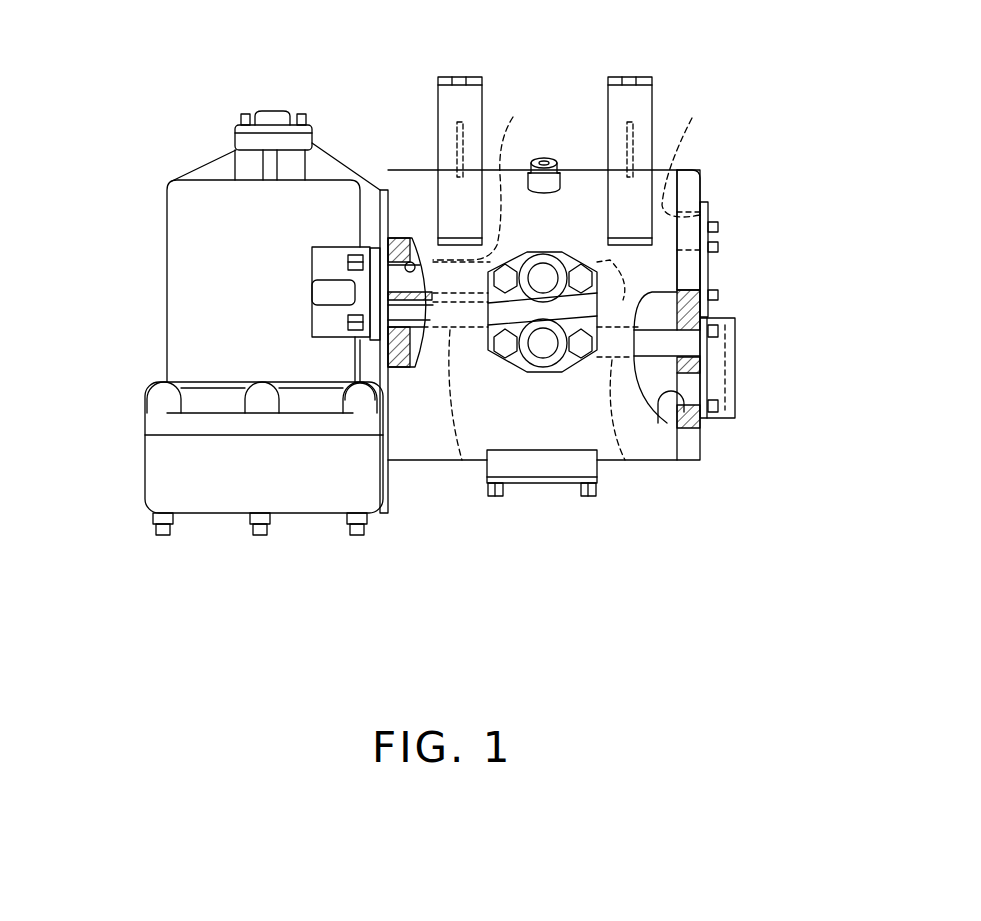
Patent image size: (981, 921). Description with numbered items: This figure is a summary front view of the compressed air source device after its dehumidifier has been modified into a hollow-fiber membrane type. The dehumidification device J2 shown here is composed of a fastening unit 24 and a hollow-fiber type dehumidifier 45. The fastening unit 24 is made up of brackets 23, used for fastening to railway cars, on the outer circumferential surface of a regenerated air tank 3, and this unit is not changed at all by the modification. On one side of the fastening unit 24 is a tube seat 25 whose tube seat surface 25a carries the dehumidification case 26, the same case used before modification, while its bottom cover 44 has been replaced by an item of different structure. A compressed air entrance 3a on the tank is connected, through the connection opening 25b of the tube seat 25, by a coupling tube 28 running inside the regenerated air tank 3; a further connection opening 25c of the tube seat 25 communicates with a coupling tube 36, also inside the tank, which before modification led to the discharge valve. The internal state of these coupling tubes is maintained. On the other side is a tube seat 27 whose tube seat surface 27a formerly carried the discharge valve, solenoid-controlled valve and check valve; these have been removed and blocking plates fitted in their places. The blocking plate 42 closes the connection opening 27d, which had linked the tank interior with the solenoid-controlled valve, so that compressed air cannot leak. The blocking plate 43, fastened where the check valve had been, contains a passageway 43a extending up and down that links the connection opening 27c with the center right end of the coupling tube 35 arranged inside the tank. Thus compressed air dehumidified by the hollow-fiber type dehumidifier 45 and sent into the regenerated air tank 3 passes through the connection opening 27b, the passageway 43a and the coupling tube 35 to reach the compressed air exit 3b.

The dehumidification device J2 is at (134, 162).
The hollow-fiber type dehumidifier 45 is at (152, 267).
The dehumidification case 26 is at (185, 325).
The bottom cover 44 is at (219, 497).
The tube seat 25 is at (397, 440).
The tube seat surface 25a is at (412, 253).
The connection opening 25b is at (418, 296).
The connection opening 25c is at (422, 380).
The regenerated air tank 3 is at (517, 193).
The compressed air entrance 3a is at (567, 257).
The compressed air exit 3b is at (518, 350).
The brackets 23 is at (447, 98).
The coupling tube 28 is at (485, 170).
The connection opening 27d is at (703, 148).
The tube seat surface 27a is at (703, 183).
The blocking plate 42 is at (707, 268).
The connection opening 27c is at (700, 328).
The blocking plate 43 is at (728, 358).
The passageway 43a is at (718, 403).
The tube seat 27 is at (690, 447).
The connection opening 27b is at (663, 423).
The coupling tube 35 is at (625, 460).
The coupling tube 36 is at (462, 460).
The fastening unit 24 is at (565, 496).